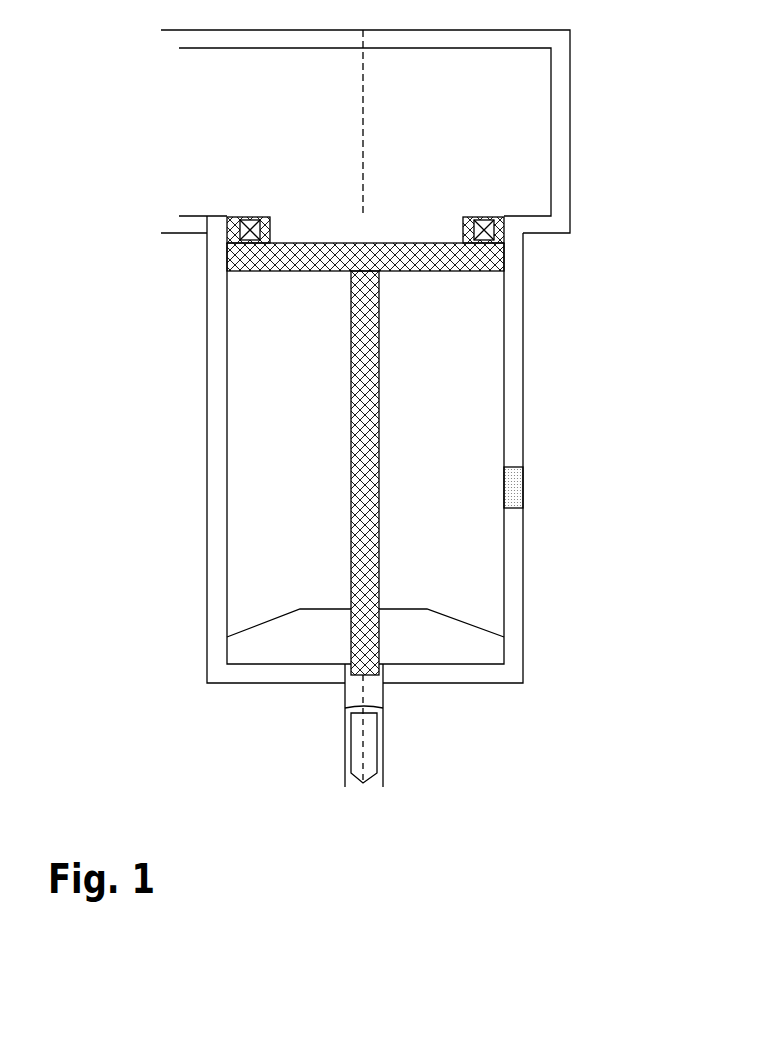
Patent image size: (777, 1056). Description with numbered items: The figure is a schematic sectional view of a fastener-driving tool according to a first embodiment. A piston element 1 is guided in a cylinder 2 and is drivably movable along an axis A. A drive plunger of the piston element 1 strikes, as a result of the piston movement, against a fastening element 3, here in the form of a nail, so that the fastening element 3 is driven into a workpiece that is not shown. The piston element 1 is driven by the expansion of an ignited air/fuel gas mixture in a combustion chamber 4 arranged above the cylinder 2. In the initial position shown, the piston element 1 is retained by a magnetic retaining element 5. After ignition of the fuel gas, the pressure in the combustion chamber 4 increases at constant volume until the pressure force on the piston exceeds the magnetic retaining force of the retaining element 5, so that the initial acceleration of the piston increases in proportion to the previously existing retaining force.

The piston element 1 is at (474, 259).
The cylinder 2 is at (438, 402).
The fastening element 3 is at (374, 739).
The combustion chamber 4 is at (474, 126).
The magnetic retaining element 5 is at (270, 223).